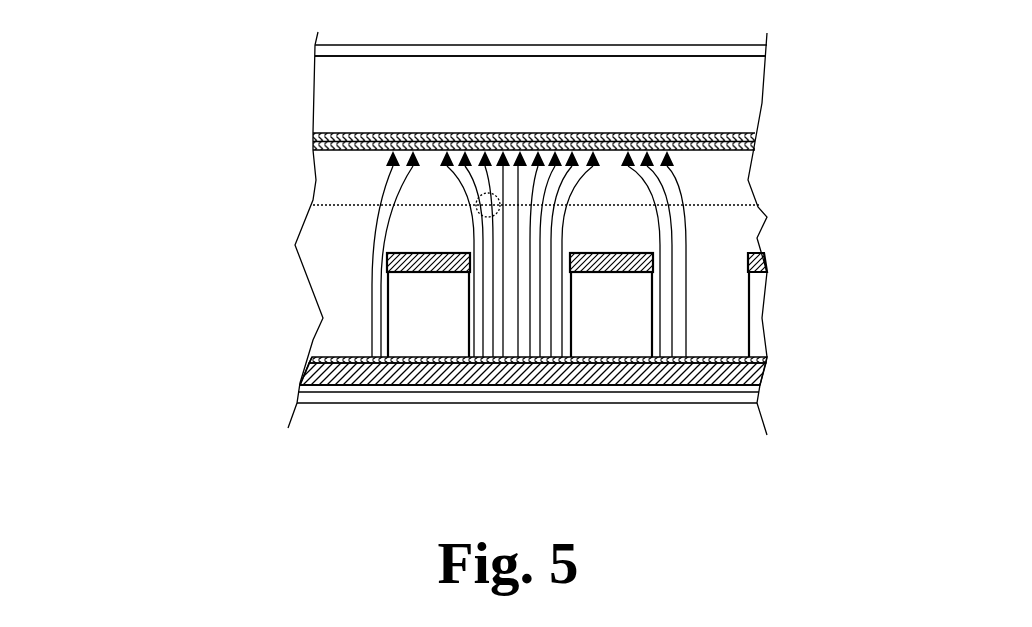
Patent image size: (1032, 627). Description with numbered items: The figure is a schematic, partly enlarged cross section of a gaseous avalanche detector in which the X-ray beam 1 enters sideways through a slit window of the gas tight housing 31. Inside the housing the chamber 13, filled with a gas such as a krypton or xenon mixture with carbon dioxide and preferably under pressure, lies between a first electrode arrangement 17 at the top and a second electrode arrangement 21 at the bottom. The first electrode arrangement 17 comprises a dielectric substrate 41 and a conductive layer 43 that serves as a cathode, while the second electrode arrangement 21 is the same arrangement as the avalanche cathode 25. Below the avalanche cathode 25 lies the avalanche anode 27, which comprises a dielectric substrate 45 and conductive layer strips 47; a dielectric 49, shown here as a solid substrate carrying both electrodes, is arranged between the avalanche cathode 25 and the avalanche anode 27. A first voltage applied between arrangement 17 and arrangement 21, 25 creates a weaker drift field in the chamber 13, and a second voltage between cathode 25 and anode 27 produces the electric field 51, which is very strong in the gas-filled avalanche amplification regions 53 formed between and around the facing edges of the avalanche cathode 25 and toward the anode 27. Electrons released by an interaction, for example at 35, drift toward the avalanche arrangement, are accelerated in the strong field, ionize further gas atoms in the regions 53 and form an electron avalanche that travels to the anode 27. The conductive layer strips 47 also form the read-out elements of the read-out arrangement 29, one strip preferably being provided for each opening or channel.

The X-ray beam 1 is at (345, 203).
The chamber 13 is at (743, 98).
The first electrode arrangement 17 is at (506, 123).
The second electrode arrangement 21 is at (543, 269).
The avalanche cathode 25 is at (387, 255).
The avalanche anode 27 is at (523, 421).
The read-out arrangement 29 is at (523, 421).
The gas tight housing 31 is at (737, 49).
The interaction point 35 is at (487, 216).
The dielectric substrate 41 is at (313, 133).
The conductive layer 43 is at (313, 150).
The dielectric substrate 45 is at (305, 376).
The conductive layer strips 47 is at (347, 380).
The dielectric 49 is at (413, 340).
The electric field 51 is at (673, 180).
The avalanche amplification regions 53 is at (328, 372).